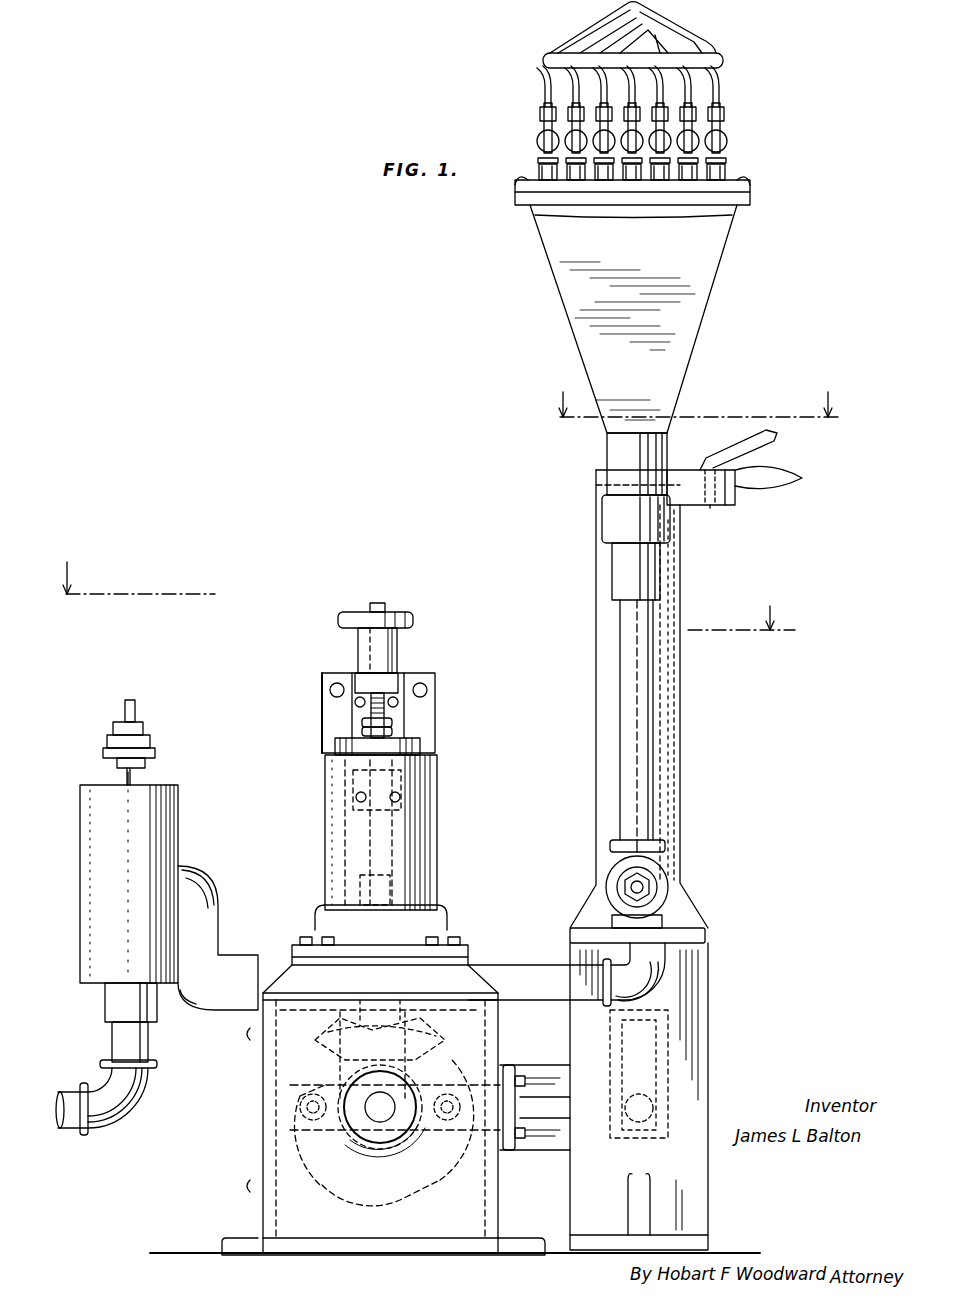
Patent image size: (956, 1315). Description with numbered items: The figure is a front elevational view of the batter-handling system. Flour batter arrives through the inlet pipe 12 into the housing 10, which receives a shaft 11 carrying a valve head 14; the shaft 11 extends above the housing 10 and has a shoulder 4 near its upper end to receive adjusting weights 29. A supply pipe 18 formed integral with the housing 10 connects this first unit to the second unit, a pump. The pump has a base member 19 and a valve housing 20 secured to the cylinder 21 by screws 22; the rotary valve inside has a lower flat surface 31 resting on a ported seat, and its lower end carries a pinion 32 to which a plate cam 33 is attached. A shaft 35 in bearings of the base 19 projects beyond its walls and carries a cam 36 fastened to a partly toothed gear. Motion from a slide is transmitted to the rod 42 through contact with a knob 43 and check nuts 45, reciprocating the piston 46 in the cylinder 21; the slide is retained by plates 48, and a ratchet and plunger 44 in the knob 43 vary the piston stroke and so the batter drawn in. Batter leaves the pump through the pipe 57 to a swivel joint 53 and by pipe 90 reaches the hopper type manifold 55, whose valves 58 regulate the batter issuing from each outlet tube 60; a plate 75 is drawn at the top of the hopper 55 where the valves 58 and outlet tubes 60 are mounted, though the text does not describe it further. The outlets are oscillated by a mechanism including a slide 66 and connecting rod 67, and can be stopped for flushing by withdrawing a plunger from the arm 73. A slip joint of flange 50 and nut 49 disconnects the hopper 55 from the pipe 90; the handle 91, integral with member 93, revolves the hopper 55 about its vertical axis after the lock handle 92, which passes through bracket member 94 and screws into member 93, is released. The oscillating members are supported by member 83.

The shoulder 4 is at (150, 766).
The housing 10 is at (82, 934).
The shaft 11 is at (136, 775).
The inlet pipe 12 is at (62, 1092).
The valve head 14 is at (693, 394).
The supply pipe 18 is at (212, 896).
The base member 19 is at (288, 1128).
The valve housing 20 is at (470, 957).
The cylinder 21 is at (420, 855).
The screws 22 is at (306, 937).
The adjusting weights 29 is at (110, 740).
The lower flat surface 31 is at (322, 1156).
The pinion 32 is at (326, 1066).
The plate cam 33 is at (384, 1050).
The shaft 35 is at (392, 1103).
The cam 36 is at (330, 1188).
The rod 42 is at (356, 712).
The knob 43 is at (398, 648).
The plunger 44 is at (425, 708).
The check nuts 45 is at (394, 728).
The piston 46 is at (420, 749).
The plates 48 is at (322, 738).
The nut 49 is at (604, 520).
The flange 50 is at (612, 566).
The swivel joint 53 is at (670, 884).
The hopper type manifold 55 is at (712, 288).
The pipe 57 is at (542, 965).
The valves 58 is at (545, 147).
The outlet tubes 60 is at (690, 13).
The slide 66 is at (538, 1066).
The connecting rod 67 is at (451, 1133).
The arm 73 is at (680, 753).
The nozzle plate 75 is at (752, 184).
The supporting member 83 is at (700, 1008).
The pipe 90 is at (650, 714).
The handle 91 is at (800, 480).
The lock handle 92 is at (777, 436).
The member 93 is at (716, 506).
The bracket member 94 is at (690, 470).